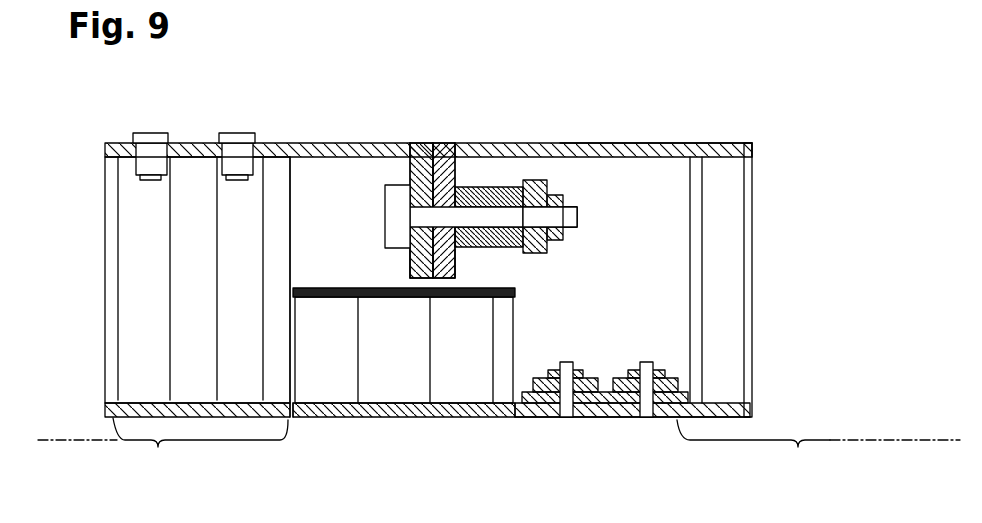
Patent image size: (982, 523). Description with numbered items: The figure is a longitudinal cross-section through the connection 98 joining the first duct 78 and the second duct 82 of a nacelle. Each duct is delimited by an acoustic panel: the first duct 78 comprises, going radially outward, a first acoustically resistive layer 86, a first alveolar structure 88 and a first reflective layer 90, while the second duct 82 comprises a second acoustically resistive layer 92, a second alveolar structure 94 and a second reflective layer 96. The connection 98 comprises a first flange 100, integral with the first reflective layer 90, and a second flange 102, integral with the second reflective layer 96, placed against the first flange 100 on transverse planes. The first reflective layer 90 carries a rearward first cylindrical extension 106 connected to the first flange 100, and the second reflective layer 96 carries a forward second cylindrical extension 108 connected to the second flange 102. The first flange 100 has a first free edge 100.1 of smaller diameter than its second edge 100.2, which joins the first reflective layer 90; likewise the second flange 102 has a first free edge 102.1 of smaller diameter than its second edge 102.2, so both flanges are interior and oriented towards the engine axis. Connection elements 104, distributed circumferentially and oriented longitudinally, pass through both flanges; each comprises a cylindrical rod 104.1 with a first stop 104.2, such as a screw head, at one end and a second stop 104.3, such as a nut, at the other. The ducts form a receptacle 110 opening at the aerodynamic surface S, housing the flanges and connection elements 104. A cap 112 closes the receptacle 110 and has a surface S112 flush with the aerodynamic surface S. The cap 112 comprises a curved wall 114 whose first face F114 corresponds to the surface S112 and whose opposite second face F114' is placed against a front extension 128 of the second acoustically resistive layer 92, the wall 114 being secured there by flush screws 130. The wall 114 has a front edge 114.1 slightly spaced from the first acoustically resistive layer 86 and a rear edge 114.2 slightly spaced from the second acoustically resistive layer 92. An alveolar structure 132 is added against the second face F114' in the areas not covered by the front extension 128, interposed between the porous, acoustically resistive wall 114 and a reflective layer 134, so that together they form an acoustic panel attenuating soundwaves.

The first duct 78 is at (163, 445).
The second duct 82 is at (818, 446).
The first acoustically resistive layer 86 is at (115, 420).
The first alveolar structure 88 is at (90, 158).
The first reflective layer 90 is at (120, 148).
The second acoustically resistive layer 92 is at (752, 413).
The second alveolar structure 94 is at (763, 157).
The second reflective layer 96 is at (755, 150).
The connection 98 is at (433, 120).
The first flange 100 is at (421, 150).
The first free edge 100.1 is at (416, 258).
The second edge 100.2 is at (410, 150).
The second flange 102 is at (445, 150).
The first free edge 102.1 is at (450, 262).
The second edge 102.2 is at (455, 150).
The connection elements 104 is at (505, 157).
The cylindrical rod 104.1 is at (577, 217).
The first stop 104.2 is at (395, 205).
The second stop 104.3 is at (537, 190).
The first cylindrical extension 106 is at (310, 150).
The second cylindrical extension 108 is at (560, 155).
The receptacle 110 is at (645, 244).
The cap 112 is at (468, 447).
The curved wall 114 is at (522, 430).
The front edge 114.1 is at (298, 420).
The rear edge 114.2 is at (665, 418).
The front extension 128 is at (608, 392).
The flush screws 130 is at (565, 405).
The alveolar structure 132 is at (400, 392).
The reflective layer 134 is at (320, 287).
The aerodynamic surface S is at (247, 432).
The surface of the cap S112 is at (608, 432).
The first face F114 is at (378, 435).
The second face F114' is at (354, 452).